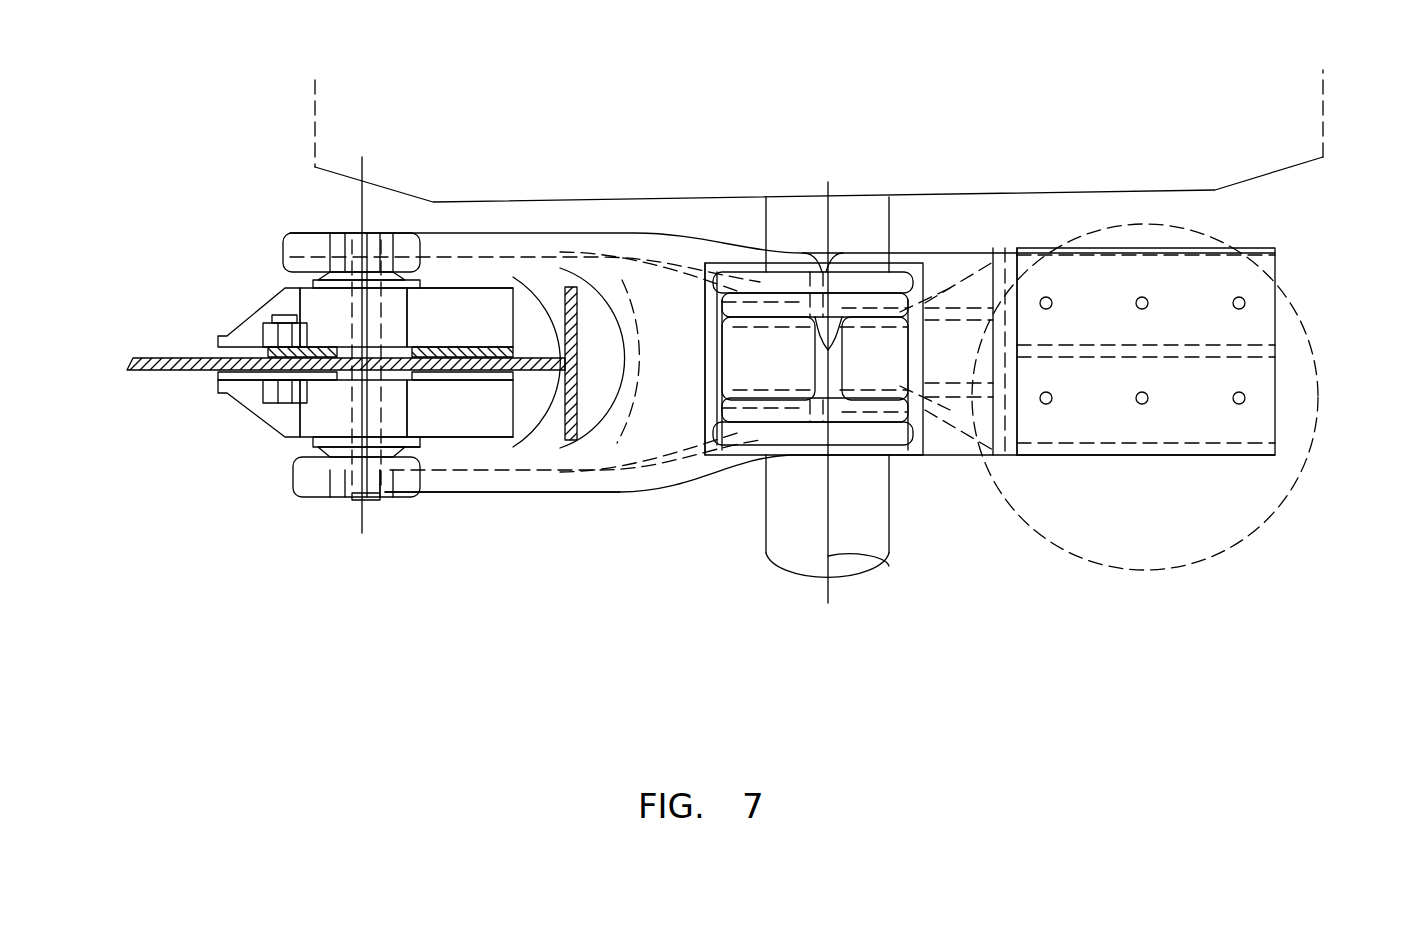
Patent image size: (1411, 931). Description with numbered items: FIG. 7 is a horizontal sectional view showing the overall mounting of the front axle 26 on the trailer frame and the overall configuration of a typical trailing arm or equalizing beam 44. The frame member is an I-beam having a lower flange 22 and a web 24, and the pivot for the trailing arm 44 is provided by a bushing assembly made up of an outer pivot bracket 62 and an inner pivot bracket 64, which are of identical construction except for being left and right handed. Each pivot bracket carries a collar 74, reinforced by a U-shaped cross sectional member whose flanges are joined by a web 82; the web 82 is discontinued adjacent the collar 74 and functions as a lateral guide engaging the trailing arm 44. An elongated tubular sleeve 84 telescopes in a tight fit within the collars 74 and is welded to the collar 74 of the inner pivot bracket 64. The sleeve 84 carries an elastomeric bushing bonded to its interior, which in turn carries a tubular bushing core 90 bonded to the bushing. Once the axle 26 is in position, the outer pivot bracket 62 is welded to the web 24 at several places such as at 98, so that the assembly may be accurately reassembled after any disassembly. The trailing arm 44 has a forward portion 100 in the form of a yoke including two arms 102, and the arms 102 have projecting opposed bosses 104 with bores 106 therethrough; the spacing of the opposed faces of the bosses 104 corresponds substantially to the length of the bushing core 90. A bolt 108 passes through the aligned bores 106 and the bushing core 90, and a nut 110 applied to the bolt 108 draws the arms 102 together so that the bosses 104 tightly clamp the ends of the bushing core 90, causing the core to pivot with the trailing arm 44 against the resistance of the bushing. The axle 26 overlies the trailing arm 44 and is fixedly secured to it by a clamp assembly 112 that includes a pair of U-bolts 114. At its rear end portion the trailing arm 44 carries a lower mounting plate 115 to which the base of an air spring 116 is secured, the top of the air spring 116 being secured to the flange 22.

The lower flange 22 is at (577, 440).
The web 24 is at (178, 372).
The front axle 26 is at (856, 535).
The trailing arm 44 is at (948, 460).
The outer pivot bracket 62 is at (250, 314).
The inner pivot bracket 64 is at (247, 385).
The collar 74 is at (408, 300).
The web 82 is at (473, 268).
The tubular sleeve 84 is at (433, 443).
The bushing core 90 is at (392, 268).
The weld 98 is at (268, 352).
The forward portion 100 is at (435, 495).
The arms 102 is at (443, 243).
The bosses 104 is at (353, 275).
The bores 106 is at (360, 257).
The bolt 108 is at (333, 235).
The nut 110 is at (313, 490).
The clamp assembly 112 is at (708, 440).
The U-bolts 114 is at (745, 282).
The lower mounting plate 115 is at (1048, 275).
The air spring 116 is at (1230, 527).